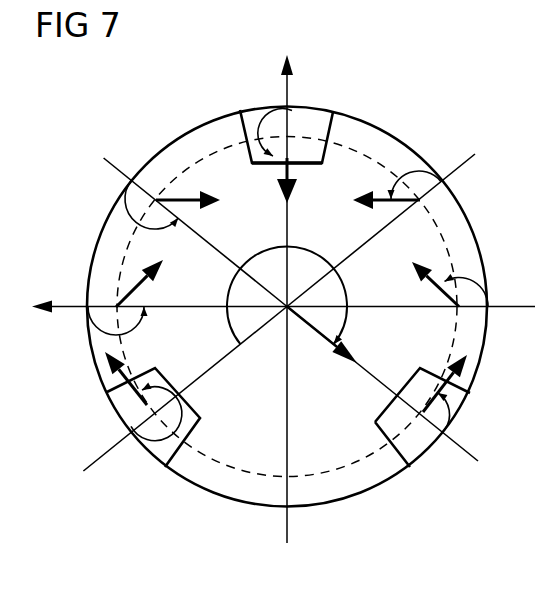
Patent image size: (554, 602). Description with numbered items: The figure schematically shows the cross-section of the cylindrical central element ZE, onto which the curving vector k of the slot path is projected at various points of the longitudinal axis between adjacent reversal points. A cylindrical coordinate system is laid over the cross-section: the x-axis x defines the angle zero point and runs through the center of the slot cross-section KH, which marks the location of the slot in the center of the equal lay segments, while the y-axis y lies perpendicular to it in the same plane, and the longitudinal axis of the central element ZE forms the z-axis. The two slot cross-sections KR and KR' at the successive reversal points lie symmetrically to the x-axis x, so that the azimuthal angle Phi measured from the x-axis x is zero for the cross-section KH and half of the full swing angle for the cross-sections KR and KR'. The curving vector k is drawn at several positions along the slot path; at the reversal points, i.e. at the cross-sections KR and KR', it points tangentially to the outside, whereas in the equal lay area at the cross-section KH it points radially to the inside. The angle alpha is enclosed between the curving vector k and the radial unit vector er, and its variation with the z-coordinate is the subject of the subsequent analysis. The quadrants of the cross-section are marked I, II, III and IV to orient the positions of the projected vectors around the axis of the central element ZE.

The slot cross-section in the equal lay center KH is at (256, 118).
The central element ZE is at (118, 223).
The slot cross-section at a reversal point KR is at (444, 411).
The slot cross-section at the other reversal point KR' is at (121, 409).
The curving vector k is at (430, 282).
The angle enclosed by the curving vector and the radial unit vector alpha is at (475, 276).
The azimuthal angle Phi is at (303, 266).
The radial unit vector er is at (322, 340).
The x-axis x is at (297, 299).
The y-axis y is at (283, 320).
The sector I is at (381, 208).
The sector II is at (195, 209).
The sector III is at (185, 400).
The sector IV is at (382, 399).